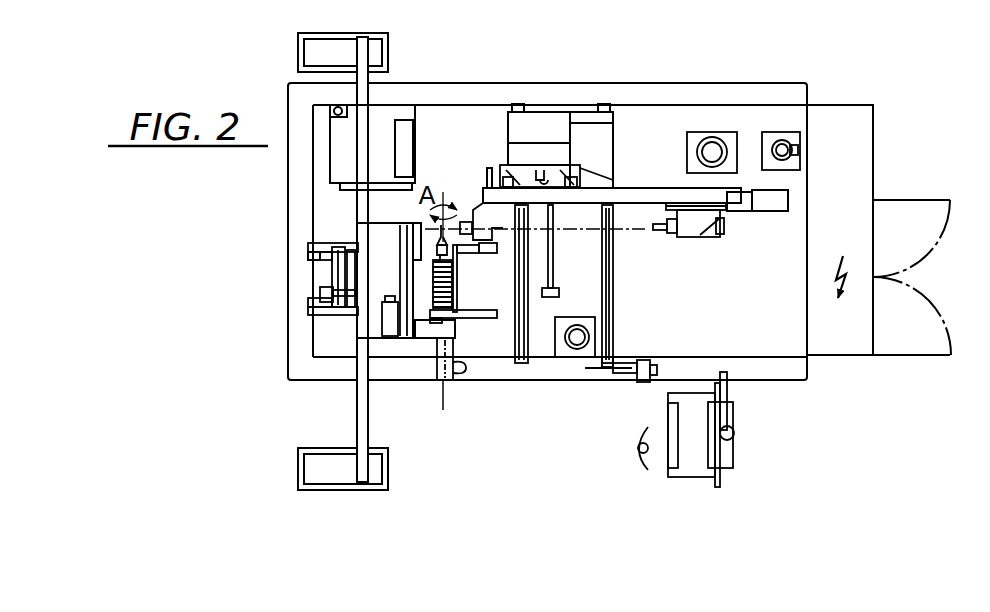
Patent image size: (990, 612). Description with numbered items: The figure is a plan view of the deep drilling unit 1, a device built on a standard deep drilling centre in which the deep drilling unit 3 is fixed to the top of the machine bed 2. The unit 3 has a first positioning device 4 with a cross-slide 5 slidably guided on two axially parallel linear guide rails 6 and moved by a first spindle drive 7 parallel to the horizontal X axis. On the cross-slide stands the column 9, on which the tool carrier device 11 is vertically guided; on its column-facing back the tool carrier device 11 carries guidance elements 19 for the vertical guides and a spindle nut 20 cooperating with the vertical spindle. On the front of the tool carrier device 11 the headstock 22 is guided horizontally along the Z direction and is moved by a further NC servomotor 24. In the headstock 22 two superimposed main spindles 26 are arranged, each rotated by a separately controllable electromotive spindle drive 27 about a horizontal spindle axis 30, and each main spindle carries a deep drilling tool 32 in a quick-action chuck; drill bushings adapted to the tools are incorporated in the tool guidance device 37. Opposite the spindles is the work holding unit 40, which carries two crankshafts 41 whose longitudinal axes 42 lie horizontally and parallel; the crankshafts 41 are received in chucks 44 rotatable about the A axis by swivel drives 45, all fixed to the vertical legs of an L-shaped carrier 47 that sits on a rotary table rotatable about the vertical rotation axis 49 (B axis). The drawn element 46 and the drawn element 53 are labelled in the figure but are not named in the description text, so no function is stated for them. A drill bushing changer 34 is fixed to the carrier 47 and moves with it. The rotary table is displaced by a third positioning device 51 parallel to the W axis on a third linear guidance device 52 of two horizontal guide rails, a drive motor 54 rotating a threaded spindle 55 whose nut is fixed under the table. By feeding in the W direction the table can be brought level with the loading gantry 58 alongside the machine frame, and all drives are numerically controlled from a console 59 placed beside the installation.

The deep drilling unit 1 is at (878, 101).
The machine bed 2 is at (757, 334).
The deep drilling unit 3 is at (656, 126).
The first positioning device 4 is at (625, 290).
The cross-slide 5 is at (597, 147).
The linear guide rails 6 is at (602, 304).
The first spindle drive 7 is at (551, 252).
The column 9 is at (501, 150).
The tool carrier device 11 is at (680, 185).
The guidance elements 19 is at (494, 186).
The spindle nut 20 is at (546, 174).
The headstock 22 is at (728, 211).
The NC servomotor 24 is at (785, 211).
The main spindles 26 is at (674, 238).
The spindle drive 27 is at (708, 237).
The spindle axis 30 is at (642, 233).
The deep drilling tool 32 is at (623, 378).
The drill bushing changer 34 is at (449, 385).
The tool guidance device 37 is at (473, 216).
The work holding unit 40 is at (327, 342).
The crankshafts 41 is at (455, 279).
The longitudinal axes 42 is at (443, 400).
The chucks 44 is at (455, 322).
The swivel drive 45 is at (387, 328).
The base 46 is at (423, 343).
The L-shaped carrier 47 is at (363, 313).
The vertical rotation axis 49 is at (421, 283).
The third positioning device 51 is at (278, 257).
The third linear guidance device 52 is at (304, 291).
The lower clamp 53 is at (321, 303).
The drive motor 54 is at (323, 258).
The threaded spindle 55 is at (308, 256).
The loading gantry 58 is at (380, 473).
The console 59 is at (738, 448).